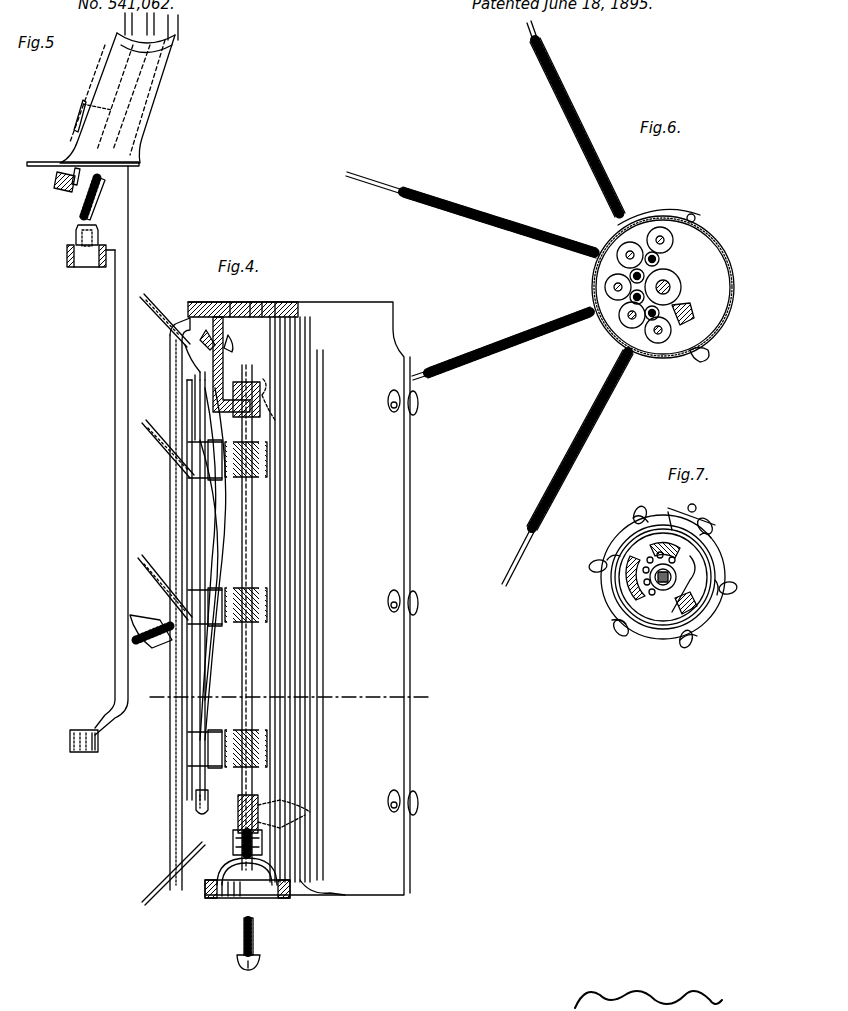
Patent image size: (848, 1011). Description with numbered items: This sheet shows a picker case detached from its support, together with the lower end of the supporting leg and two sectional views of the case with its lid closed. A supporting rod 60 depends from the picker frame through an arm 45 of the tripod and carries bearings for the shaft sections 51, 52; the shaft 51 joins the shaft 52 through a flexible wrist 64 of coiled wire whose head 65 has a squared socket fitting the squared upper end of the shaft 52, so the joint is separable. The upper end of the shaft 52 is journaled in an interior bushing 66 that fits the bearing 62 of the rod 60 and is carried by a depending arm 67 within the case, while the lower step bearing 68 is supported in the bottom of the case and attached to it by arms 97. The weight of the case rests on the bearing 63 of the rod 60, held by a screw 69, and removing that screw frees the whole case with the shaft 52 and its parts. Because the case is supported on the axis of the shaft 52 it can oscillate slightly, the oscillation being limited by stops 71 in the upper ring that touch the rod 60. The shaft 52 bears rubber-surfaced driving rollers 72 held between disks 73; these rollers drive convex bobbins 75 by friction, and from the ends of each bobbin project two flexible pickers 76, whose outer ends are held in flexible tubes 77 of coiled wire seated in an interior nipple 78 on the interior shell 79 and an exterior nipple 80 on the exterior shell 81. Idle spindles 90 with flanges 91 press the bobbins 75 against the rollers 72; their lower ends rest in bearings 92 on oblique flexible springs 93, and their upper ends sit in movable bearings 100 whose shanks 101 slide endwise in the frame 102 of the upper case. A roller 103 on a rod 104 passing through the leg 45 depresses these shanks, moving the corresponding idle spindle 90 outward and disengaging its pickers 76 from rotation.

In FIG. 5, the arm of the tripod 45 is at (172, 70).
In FIG. 5, the rod 104 is at (128, 18).
In FIG. 5, the shaft 51 is at (158, 18).
In FIG. 5, the rod 60 is at (173, 18).
In FIG. 6, the rod 60 is at (700, 315).
In FIG. 7, the rod 60 is at (692, 605).
In FIG. 5, the roller 103 is at (58, 190).
In FIG. 5, the flexible wrist 64 is at (80, 212).
In FIG. 5, the head 65 is at (76, 237).
In FIG. 5, the bearing 62 is at (66, 260).
In FIG. 5, the bearing 63 is at (70, 735).
In FIG. 4, the frame 102 is at (243, 340).
In FIG. 7, the frame 102 is at (636, 575).
In FIG. 4, the movable bearings 100 is at (172, 370).
In FIG. 4, the exterior nipple 80 is at (165, 338).
In FIG. 7, the exterior nipple 80 is at (652, 576).
In FIG. 4, the interior nipple 78 is at (202, 340).
In FIG. 4, the shanks 101 is at (232, 340).
In FIG. 7, the shanks 101 is at (676, 580).
In FIG. 4, the depending arm 67 is at (225, 362).
In FIG. 4, the interior bushing 66 is at (268, 378).
In FIG. 4, the shaft 52 is at (252, 515).
In FIG. 6, the shaft 52 is at (670, 287).
In FIG. 4, the driving rollers 72 is at (246, 604).
In FIG. 6, the driving rollers 72 is at (672, 272).
In FIG. 4, the disks 73 is at (205, 604).
In FIG. 4, the idle spindles 90 is at (197, 393).
In FIG. 6, the idle spindles 90 is at (628, 255).
In FIG. 4, the exterior shell 81 is at (185, 405).
In FIG. 6, the exterior shell 81 is at (645, 275).
In FIG. 4, the interior shell 79 is at (200, 410).
In FIG. 4, the flexible pickers 76 is at (142, 560).
In FIG. 6, the flexible pickers 76 is at (650, 315).
In FIG. 4, the flexible tubes 77 is at (165, 566).
In FIG. 6, the flexible tubes 77 is at (471, 215).
In FIG. 4, the flanges 91 is at (210, 540).
In FIG. 4, the bearings 92 is at (196, 800).
In FIG. 4, the step bearing 68 is at (238, 812).
In FIG. 4, the flexible springs 93 is at (233, 845).
In FIG. 4, the arms 97 is at (247, 878).
In FIG. 4, the screw 69 is at (254, 945).
In FIG. 6, the bobbins 75 is at (689, 319).
In FIG. 7, the stops 71 is at (690, 560).